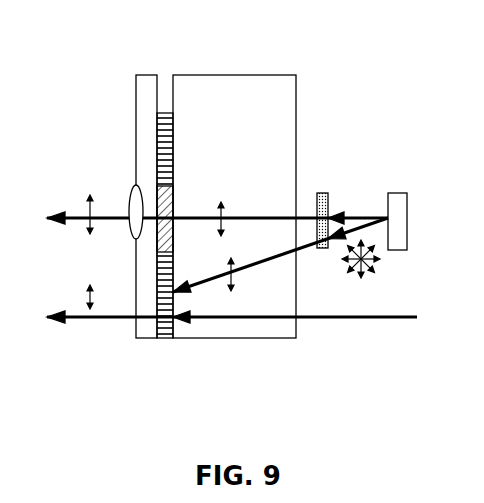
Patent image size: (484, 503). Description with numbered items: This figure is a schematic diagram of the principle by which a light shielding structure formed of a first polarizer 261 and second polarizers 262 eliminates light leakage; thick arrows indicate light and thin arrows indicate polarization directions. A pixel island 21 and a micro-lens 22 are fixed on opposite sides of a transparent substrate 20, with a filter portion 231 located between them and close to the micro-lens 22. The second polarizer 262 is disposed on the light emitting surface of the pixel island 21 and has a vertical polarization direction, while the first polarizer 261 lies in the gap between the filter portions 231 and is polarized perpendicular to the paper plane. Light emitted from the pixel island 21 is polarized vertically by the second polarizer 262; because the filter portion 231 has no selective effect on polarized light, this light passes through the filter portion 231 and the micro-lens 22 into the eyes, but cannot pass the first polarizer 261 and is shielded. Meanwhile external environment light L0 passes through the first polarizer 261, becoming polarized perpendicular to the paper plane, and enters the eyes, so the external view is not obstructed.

The transparent substrate 20 is at (238, 75).
The pixel island 21 is at (403, 193).
The micro-lens 22 is at (131, 192).
The filter portion 231 is at (172, 192).
The first polarizer 261 is at (163, 338).
The second polarizer 262 is at (322, 193).
The external environment light L0 is at (232, 330).